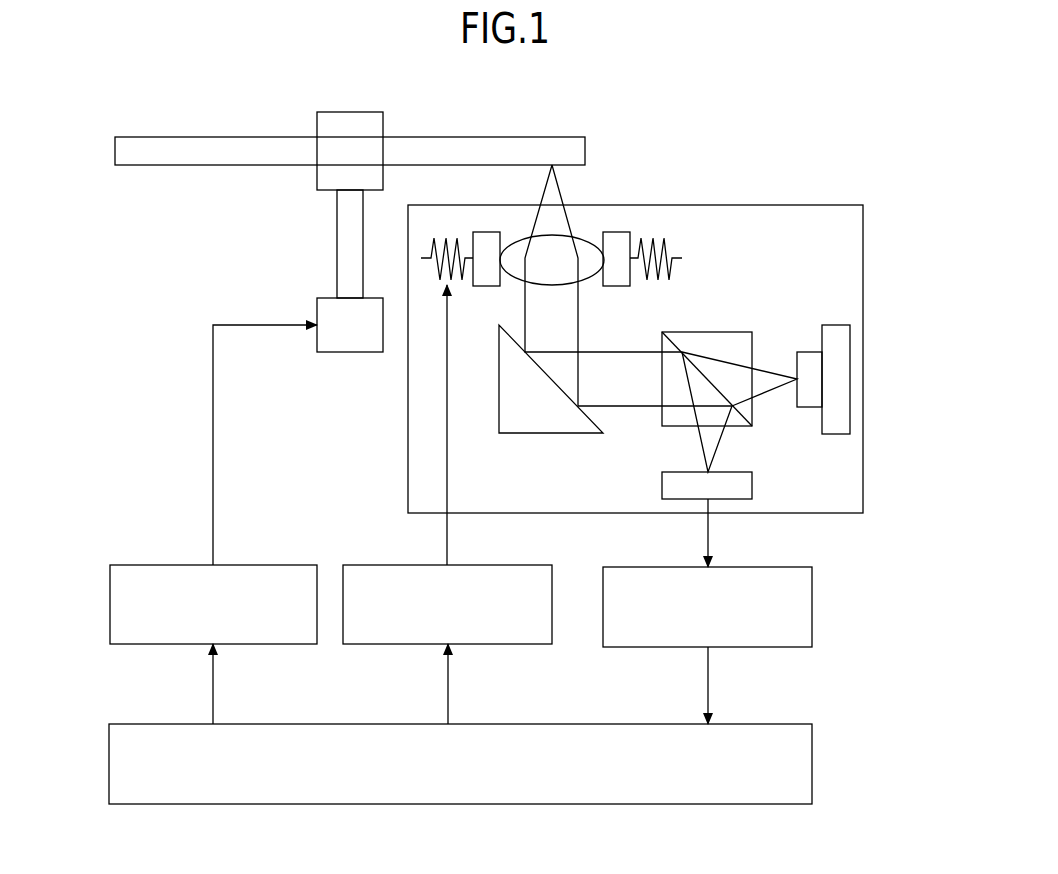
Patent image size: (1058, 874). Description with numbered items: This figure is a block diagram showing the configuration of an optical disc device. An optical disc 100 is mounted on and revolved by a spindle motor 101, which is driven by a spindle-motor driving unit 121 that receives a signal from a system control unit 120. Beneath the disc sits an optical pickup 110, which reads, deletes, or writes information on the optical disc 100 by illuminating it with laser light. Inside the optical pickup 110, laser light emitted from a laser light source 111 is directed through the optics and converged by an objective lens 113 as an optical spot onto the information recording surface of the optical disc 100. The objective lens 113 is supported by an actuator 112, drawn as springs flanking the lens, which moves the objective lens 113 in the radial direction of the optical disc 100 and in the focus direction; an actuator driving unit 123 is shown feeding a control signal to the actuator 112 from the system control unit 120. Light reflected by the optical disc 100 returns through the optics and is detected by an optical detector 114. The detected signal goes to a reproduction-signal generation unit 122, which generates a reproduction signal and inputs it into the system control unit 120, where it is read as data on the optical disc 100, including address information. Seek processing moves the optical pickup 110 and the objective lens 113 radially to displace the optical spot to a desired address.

The optical disc 100 is at (163, 166).
The spindle motor 101 is at (350, 353).
The optical pickup 110 is at (833, 205).
The laser light source 111 is at (832, 325).
The actuator 112 is at (670, 245).
The objective lens 113 is at (582, 237).
The optical detector 114 is at (662, 490).
The system control unit 120 is at (462, 805).
The spindle-motor driving unit 121 is at (140, 565).
The reproduction-signal generation unit 122 is at (813, 604).
The actuator driving unit 123 is at (373, 565).